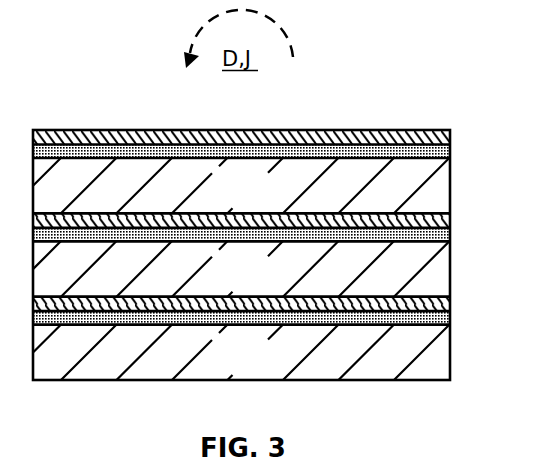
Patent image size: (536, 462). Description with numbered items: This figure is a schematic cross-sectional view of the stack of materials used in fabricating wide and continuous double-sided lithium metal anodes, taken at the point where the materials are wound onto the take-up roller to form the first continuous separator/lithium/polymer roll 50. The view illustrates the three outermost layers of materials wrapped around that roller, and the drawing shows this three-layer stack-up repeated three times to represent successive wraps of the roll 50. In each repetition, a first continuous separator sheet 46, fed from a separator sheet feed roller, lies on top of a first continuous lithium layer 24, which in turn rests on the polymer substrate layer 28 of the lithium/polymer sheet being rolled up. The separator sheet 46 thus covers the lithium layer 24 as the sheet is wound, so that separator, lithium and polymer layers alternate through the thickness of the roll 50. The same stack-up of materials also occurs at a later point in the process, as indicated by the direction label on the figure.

The first continuous lithium layer 24 is at (135, 155).
The core layer 28 is at (255, 365).
The first continuous separator sheet 46 is at (320, 137).
The first continuous separator/lithium/polymer roll 50 is at (387, 111).